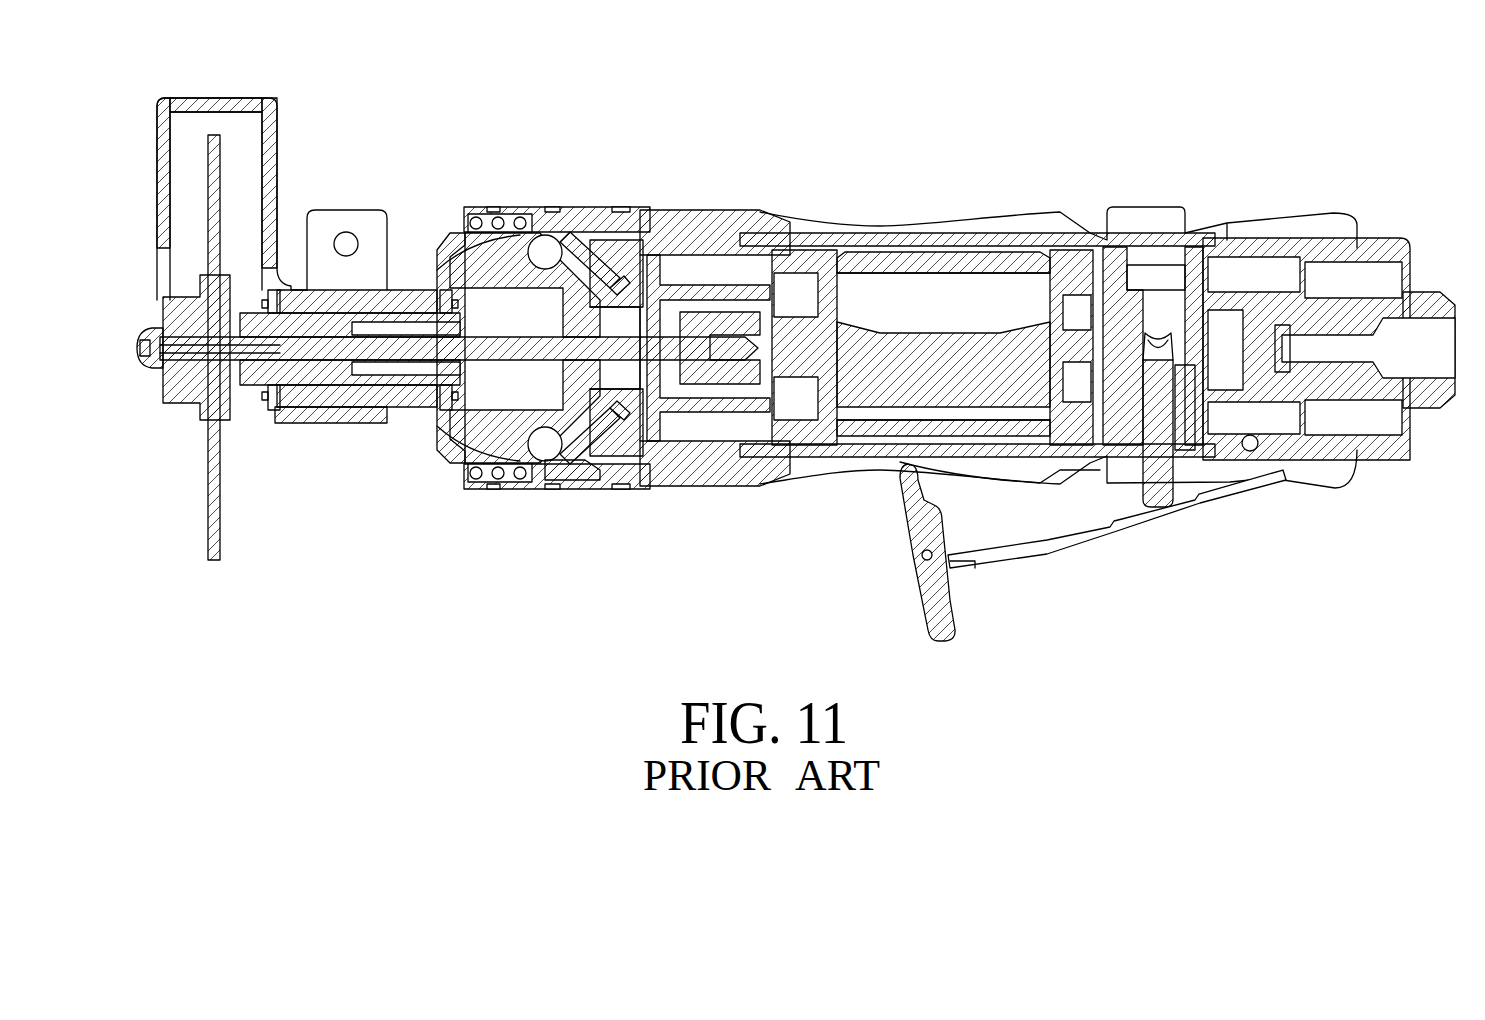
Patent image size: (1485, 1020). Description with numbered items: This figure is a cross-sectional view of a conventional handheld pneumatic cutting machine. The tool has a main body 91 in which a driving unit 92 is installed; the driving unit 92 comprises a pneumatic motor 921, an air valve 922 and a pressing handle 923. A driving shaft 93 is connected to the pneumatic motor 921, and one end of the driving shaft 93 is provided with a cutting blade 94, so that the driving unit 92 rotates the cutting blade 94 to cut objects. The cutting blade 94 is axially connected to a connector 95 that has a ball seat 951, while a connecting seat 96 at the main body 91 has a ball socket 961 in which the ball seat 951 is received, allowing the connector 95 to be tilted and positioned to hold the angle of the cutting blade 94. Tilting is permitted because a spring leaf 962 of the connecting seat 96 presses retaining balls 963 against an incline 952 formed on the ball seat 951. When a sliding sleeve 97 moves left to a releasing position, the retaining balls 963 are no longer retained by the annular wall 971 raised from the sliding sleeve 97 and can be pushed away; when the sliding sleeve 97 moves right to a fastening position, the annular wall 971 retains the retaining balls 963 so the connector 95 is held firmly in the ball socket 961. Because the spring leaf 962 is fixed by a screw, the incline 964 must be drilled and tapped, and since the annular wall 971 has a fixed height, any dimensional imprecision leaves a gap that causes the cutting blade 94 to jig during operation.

The main body 91 is at (905, 232).
The pneumatic motor 921 is at (965, 265).
The driving unit 92 is at (1113, 497).
The air valve 922 is at (1158, 470).
The pressing handle 923 is at (1060, 550).
The driving shaft 93 is at (690, 355).
The cutting blade 94 is at (218, 540).
The connector 95 is at (415, 412).
The ball seat 951 is at (470, 440).
The incline 952 is at (503, 442).
The connecting seat 96 is at (512, 245).
The ball socket 961 is at (487, 245).
The spring leaf 962 is at (612, 243).
The retaining balls 963 is at (545, 250).
The incline 964 is at (575, 245).
The sliding sleeve 97 is at (607, 489).
The annular wall 971 is at (556, 478).